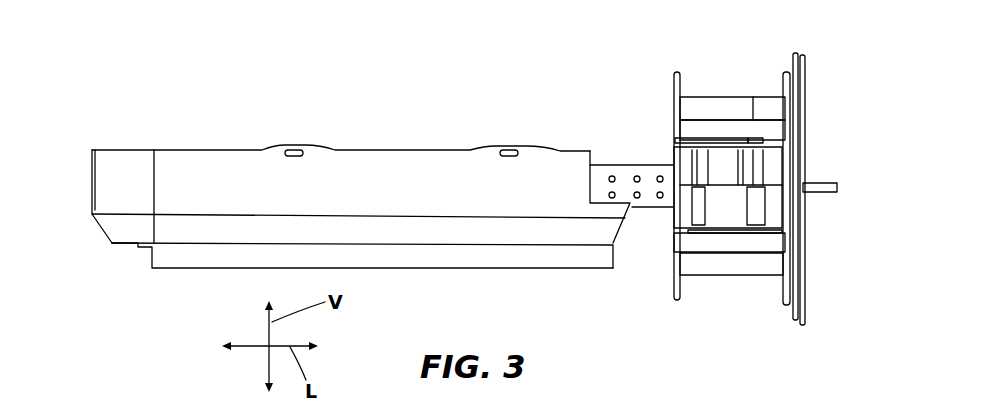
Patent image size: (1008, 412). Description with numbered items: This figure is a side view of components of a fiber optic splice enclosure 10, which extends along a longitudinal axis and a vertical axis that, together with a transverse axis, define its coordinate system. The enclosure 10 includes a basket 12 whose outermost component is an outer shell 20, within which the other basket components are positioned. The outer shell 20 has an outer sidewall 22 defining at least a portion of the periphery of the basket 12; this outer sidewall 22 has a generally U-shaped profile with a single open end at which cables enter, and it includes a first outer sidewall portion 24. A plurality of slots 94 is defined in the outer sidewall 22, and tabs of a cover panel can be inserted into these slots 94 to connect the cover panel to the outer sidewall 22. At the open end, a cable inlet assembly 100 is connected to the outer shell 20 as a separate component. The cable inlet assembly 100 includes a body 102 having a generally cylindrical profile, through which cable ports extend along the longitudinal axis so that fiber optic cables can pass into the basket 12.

The fiber optic splice enclosure 10 is at (529, 70).
The basket 12 is at (229, 120).
The outer shell 20 is at (156, 275).
The outer sidewall 22 is at (108, 205).
The first outer sidewall portion 24 is at (195, 165).
The slots 94 is at (295, 146).
The cable inlet assembly 100 is at (710, 310).
The body 102 is at (772, 243).